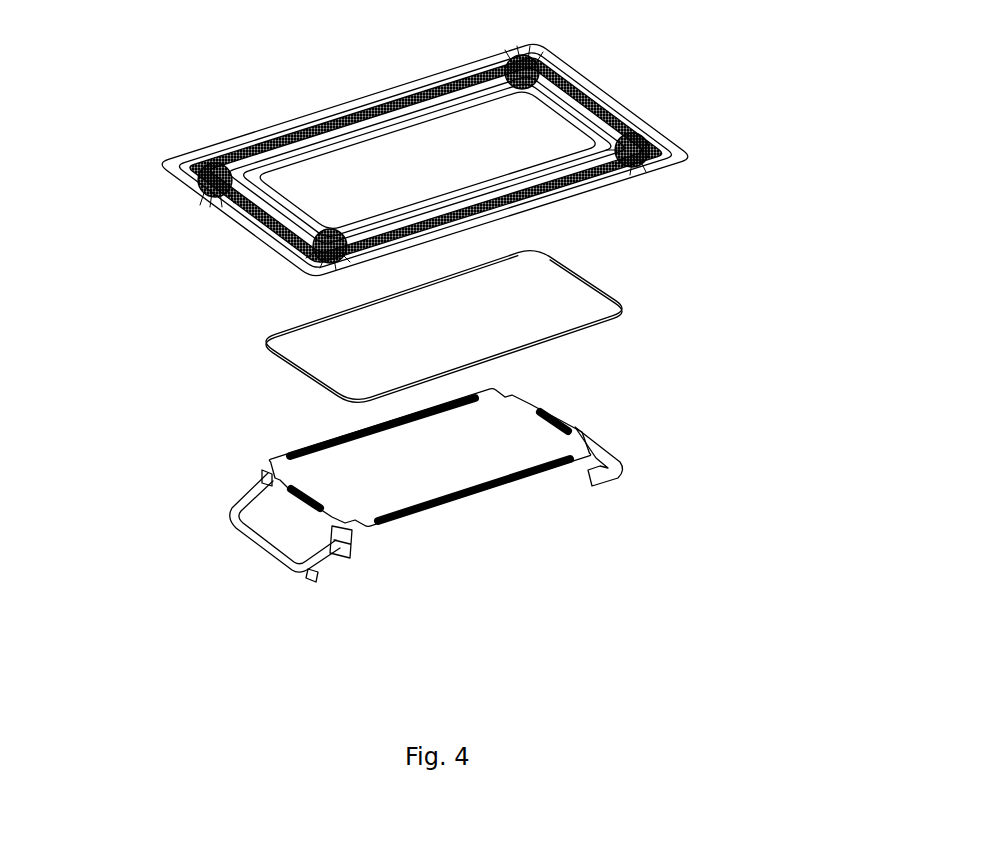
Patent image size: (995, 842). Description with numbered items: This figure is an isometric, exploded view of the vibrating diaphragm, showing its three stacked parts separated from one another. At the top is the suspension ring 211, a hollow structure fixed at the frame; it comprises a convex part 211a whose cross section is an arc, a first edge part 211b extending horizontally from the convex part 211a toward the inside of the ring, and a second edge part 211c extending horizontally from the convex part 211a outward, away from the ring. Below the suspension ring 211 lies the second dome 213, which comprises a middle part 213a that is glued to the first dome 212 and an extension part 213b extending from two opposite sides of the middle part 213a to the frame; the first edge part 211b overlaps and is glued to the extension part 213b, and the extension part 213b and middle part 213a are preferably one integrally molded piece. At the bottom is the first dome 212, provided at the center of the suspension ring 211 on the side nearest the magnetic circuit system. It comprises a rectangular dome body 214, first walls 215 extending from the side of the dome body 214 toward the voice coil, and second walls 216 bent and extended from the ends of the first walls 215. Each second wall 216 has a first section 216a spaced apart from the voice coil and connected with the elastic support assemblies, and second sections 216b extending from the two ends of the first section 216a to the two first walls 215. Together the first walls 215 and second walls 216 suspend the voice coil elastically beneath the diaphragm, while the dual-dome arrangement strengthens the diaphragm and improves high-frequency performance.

The suspension ring 211 is at (462, 147).
The convex part 211a is at (342, 120).
The first edge part 211b is at (452, 108).
The second edge part 211c is at (232, 213).
The first dome 212 is at (454, 500).
The second dome 213 is at (566, 309).
The middle part 213a is at (460, 320).
The extension part 213b is at (587, 300).
The dome body 214 is at (462, 453).
The first wall 215 is at (350, 545).
The second wall 216 is at (229, 553).
The first section 216a is at (260, 538).
The second section 216b is at (258, 483).